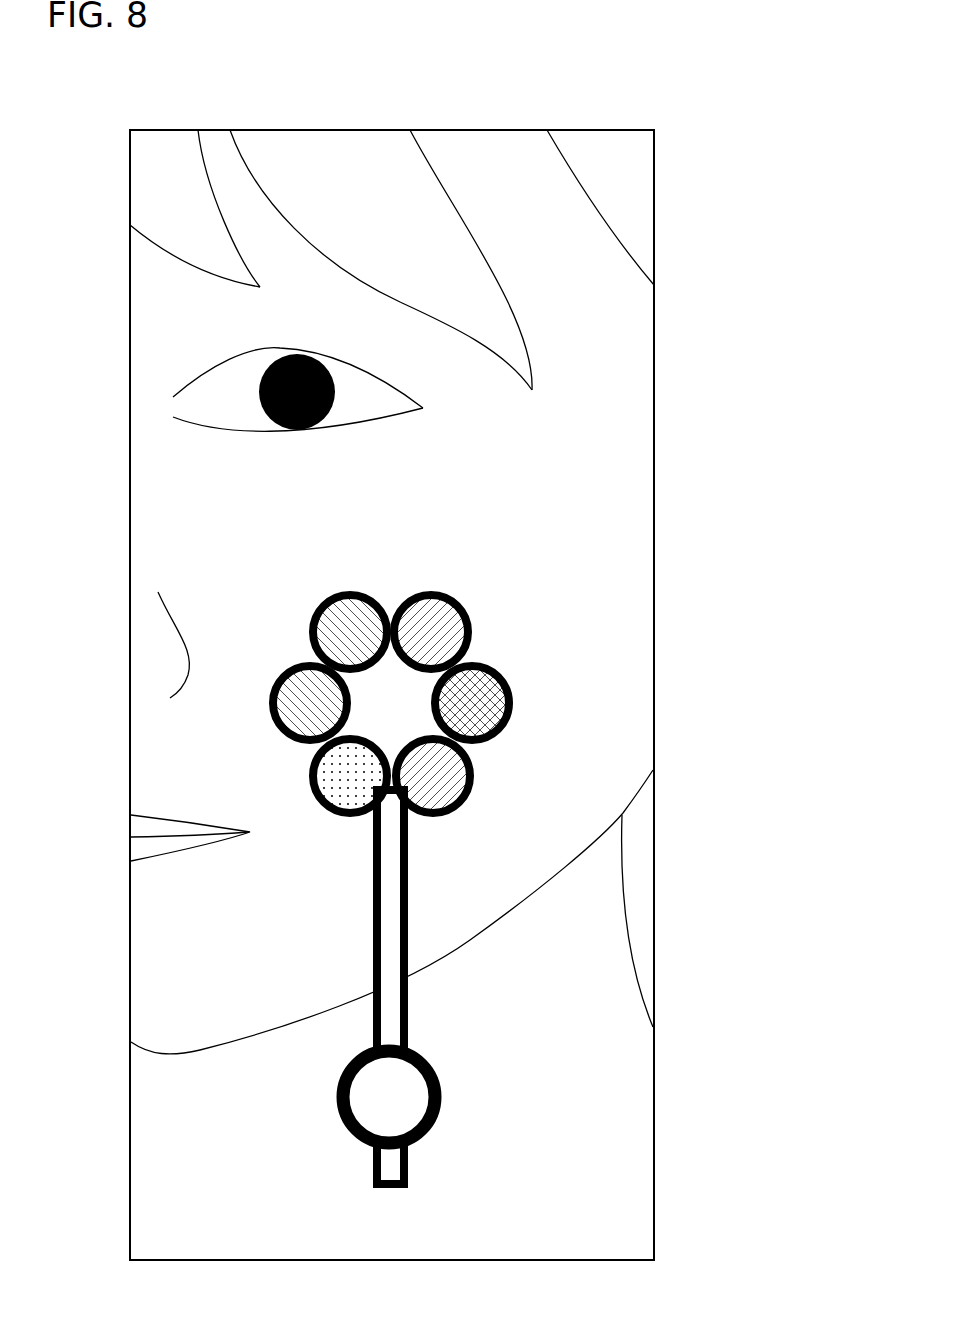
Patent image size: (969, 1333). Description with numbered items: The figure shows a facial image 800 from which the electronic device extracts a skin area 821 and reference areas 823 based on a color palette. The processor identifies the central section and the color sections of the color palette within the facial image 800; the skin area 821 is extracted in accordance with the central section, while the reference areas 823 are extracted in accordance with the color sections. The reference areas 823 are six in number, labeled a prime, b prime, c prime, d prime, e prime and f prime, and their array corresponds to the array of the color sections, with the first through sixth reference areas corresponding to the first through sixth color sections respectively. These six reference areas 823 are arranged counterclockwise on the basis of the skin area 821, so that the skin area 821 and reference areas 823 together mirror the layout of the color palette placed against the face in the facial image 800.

The facial image 800 is at (560, 493).
The skin area 821 is at (300, 703).
The reference areas 823 is at (373, 718).